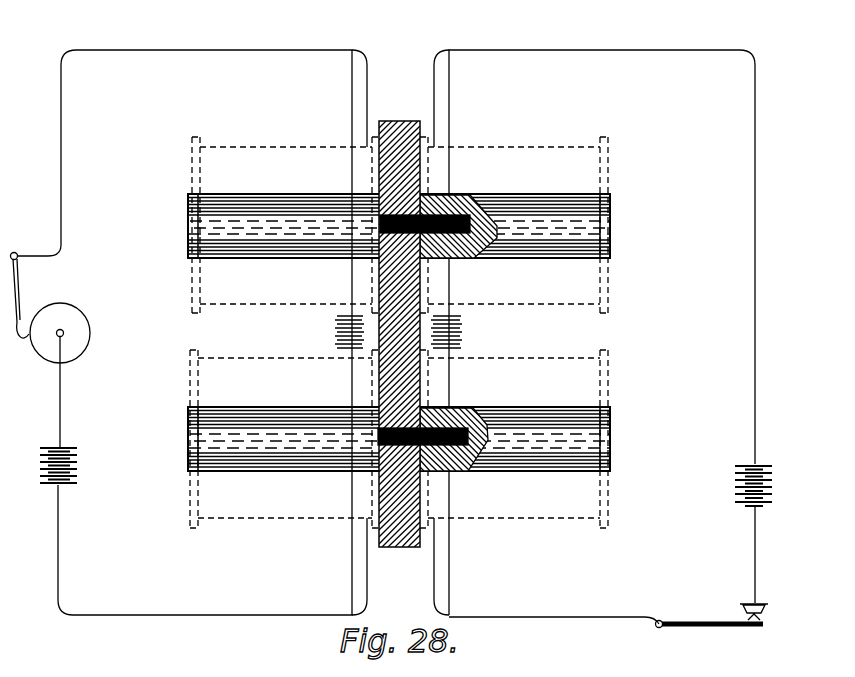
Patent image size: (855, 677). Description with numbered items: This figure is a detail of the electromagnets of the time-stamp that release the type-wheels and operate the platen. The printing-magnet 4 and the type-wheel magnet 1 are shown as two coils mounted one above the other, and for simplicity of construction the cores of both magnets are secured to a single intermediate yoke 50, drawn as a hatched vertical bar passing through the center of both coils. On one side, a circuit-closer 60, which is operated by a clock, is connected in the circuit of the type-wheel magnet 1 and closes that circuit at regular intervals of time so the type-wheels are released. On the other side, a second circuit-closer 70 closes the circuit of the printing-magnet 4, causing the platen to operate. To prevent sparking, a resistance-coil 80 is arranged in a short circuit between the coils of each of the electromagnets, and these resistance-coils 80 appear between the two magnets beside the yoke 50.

The intermediate yoke 50 is at (393, 121).
The printing-magnet 4 is at (272, 147).
The type-wheel magnet 1 is at (536, 138).
The circuit-closer 60 is at (76, 318).
The resistance-coil 80 is at (335, 332).
The circuit-closer 70 is at (683, 596).